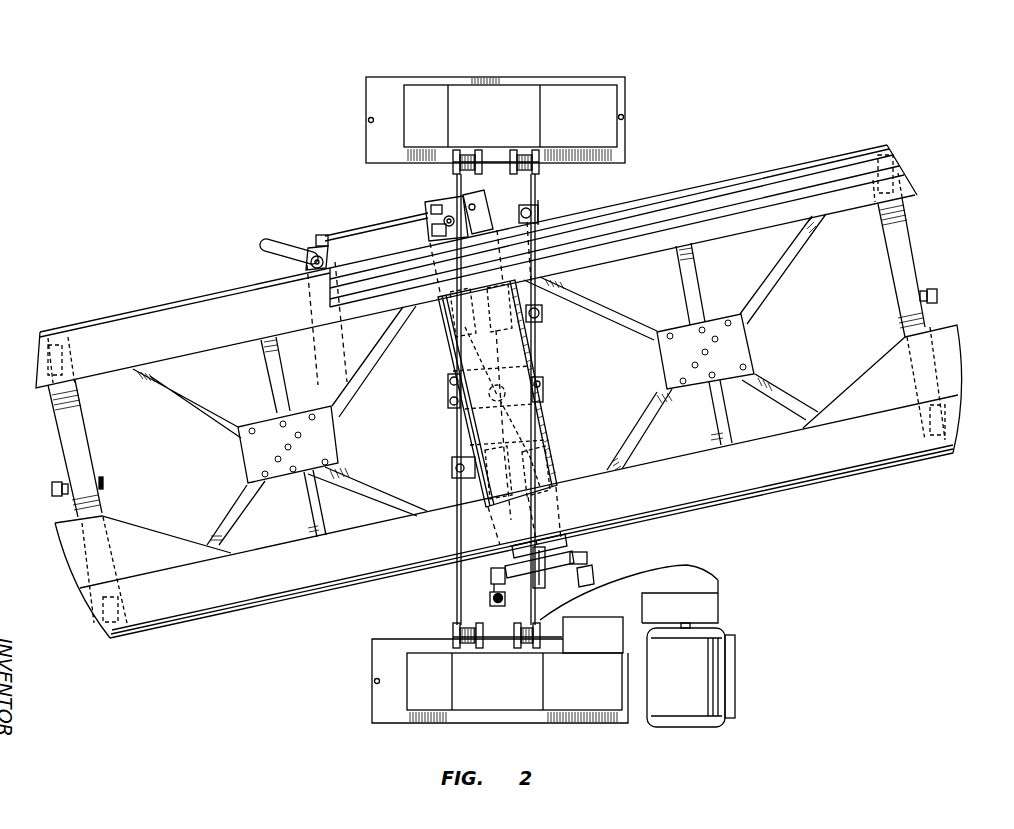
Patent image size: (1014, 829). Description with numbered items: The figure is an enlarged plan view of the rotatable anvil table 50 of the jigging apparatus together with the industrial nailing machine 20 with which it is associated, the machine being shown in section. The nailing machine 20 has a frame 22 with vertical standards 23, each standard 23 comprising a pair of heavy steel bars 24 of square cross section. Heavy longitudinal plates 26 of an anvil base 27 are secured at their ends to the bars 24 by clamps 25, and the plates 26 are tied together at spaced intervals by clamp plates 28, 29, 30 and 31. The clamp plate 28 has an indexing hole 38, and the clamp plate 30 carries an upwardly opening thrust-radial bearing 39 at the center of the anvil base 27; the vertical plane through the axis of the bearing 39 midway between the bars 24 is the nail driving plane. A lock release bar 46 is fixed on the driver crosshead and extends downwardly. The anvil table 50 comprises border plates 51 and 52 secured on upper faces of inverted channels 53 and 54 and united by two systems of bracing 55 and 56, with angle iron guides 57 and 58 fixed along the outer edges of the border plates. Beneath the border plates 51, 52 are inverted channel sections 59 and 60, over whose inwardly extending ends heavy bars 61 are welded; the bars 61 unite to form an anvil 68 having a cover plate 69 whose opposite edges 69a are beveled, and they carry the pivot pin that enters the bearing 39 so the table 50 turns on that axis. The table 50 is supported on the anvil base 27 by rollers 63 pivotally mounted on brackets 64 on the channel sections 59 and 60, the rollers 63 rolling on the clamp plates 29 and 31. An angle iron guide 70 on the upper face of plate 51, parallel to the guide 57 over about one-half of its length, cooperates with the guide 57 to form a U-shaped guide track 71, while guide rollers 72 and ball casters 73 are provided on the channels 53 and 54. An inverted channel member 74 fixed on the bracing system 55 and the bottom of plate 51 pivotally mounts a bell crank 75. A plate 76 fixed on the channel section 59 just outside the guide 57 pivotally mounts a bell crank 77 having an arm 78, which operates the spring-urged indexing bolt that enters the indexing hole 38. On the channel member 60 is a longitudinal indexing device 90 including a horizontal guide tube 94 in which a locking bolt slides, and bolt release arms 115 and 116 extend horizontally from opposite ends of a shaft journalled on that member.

The nailing machine 20 is at (672, 62).
The frame 22 is at (577, 85).
The vertical standards 23 is at (504, 96).
The heavy steel bars 24 is at (520, 148).
The clamps 25 is at (453, 168).
The heavy longitudinal plates 26 is at (455, 188).
The anvil base 27 is at (542, 202).
The clamp plate 28 is at (539, 213).
The clamp plate 29 is at (543, 314).
The clamp plate 30 is at (545, 389).
The clamp plate 31 is at (451, 472).
The indexing hole 38 is at (520, 214).
The thrust-radial bearing 39 is at (447, 399).
The lock release bar 46 is at (502, 605).
The rotatable anvil table 50 is at (851, 139).
The border plate 51 is at (195, 350).
The border plate 52 is at (322, 533).
The inverted channel 53 is at (82, 437).
The inverted channel 54 is at (905, 238).
The bracing system 55 is at (337, 442).
The bracing system 56 is at (757, 345).
The angle iron guide 57 is at (117, 320).
The angle iron guide 58 is at (183, 614).
The inverted channel section 59 is at (490, 206).
The inverted channel section 60 is at (563, 548).
The heavy bars 61 is at (455, 369).
The rollers 63 is at (487, 394).
The brackets 64 is at (548, 462).
The anvil 68 is at (525, 422).
The cover plate 69 is at (487, 428).
The beveled edges 69a is at (444, 340).
The angle iron guide 70 is at (684, 215).
The U-shape guide track 71 is at (698, 200).
The guide rollers 72 is at (937, 300).
The ball casters 73 is at (900, 166).
The inverted channel member 74 is at (310, 250).
The bell crank 75 is at (268, 244).
The plate 76 is at (474, 204).
The bell crank 77 is at (424, 208).
The arm 78 is at (438, 228).
The longitudinal indexing device 90 is at (600, 558).
The horizontal guide tube 94 is at (545, 585).
The bolt release arm 115 is at (491, 586).
The bolt release arm 116 is at (594, 575).